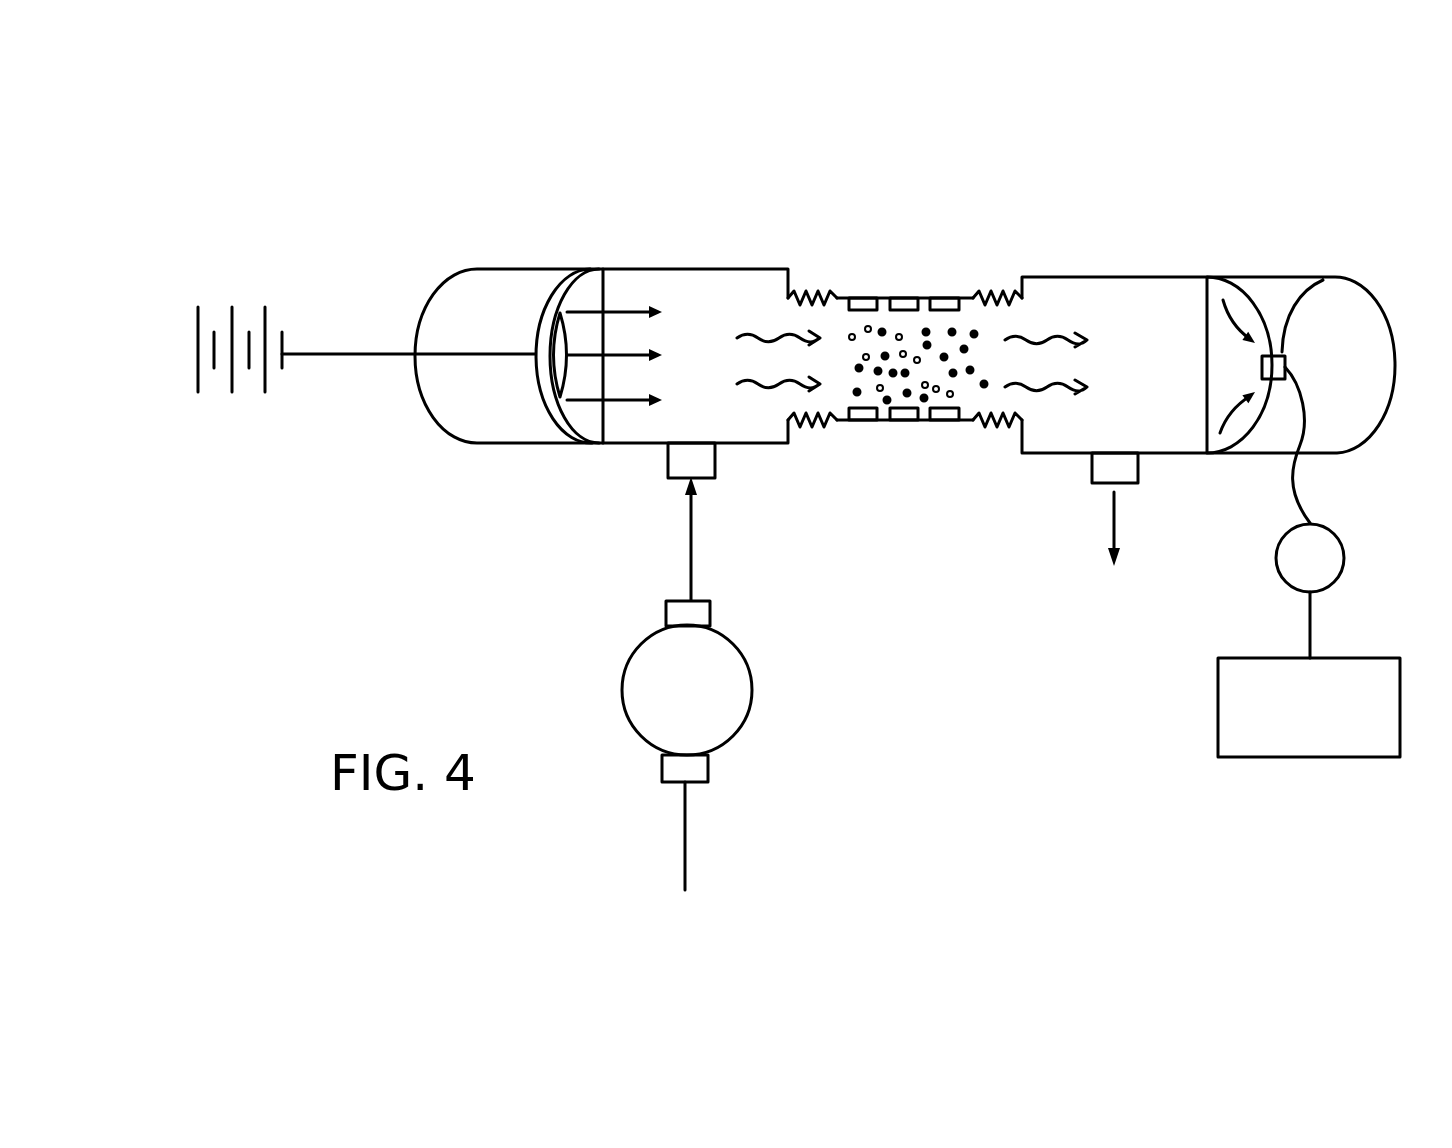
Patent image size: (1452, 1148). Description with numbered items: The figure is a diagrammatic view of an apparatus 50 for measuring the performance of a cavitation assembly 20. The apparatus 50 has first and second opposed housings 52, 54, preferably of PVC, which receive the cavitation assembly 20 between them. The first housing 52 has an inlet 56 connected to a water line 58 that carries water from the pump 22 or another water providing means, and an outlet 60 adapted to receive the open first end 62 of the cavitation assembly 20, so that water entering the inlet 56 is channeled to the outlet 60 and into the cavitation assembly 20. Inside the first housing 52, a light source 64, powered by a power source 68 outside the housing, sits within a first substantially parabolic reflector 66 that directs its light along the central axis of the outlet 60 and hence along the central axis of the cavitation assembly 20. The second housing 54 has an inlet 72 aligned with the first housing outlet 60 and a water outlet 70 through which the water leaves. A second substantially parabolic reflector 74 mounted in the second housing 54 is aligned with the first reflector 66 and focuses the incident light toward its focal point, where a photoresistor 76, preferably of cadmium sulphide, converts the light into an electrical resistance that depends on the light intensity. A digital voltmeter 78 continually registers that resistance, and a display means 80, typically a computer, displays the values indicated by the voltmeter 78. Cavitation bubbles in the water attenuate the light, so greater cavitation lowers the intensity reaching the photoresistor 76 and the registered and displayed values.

The cavitation assembly 20 is at (907, 262).
The pump 22 is at (753, 690).
The apparatus 50 is at (1122, 218).
The first housing 52 is at (483, 268).
The second housing 54 is at (1388, 403).
The inlet 56 is at (660, 458).
The water line 58 is at (691, 544).
The outlet 60 is at (806, 305).
The open first end 62 is at (808, 422).
The light source 64 is at (630, 283).
The first substantially parabolic reflector 66 is at (560, 285).
The power source 68 is at (197, 368).
The water outlet 70 is at (1100, 487).
The inlet 72 is at (1018, 338).
The second substantially parabolic reflector 74 is at (1268, 300).
The photoresistor 76 is at (1317, 280).
The digital voltmeter 78 is at (1276, 557).
The display means 80 is at (1290, 722).